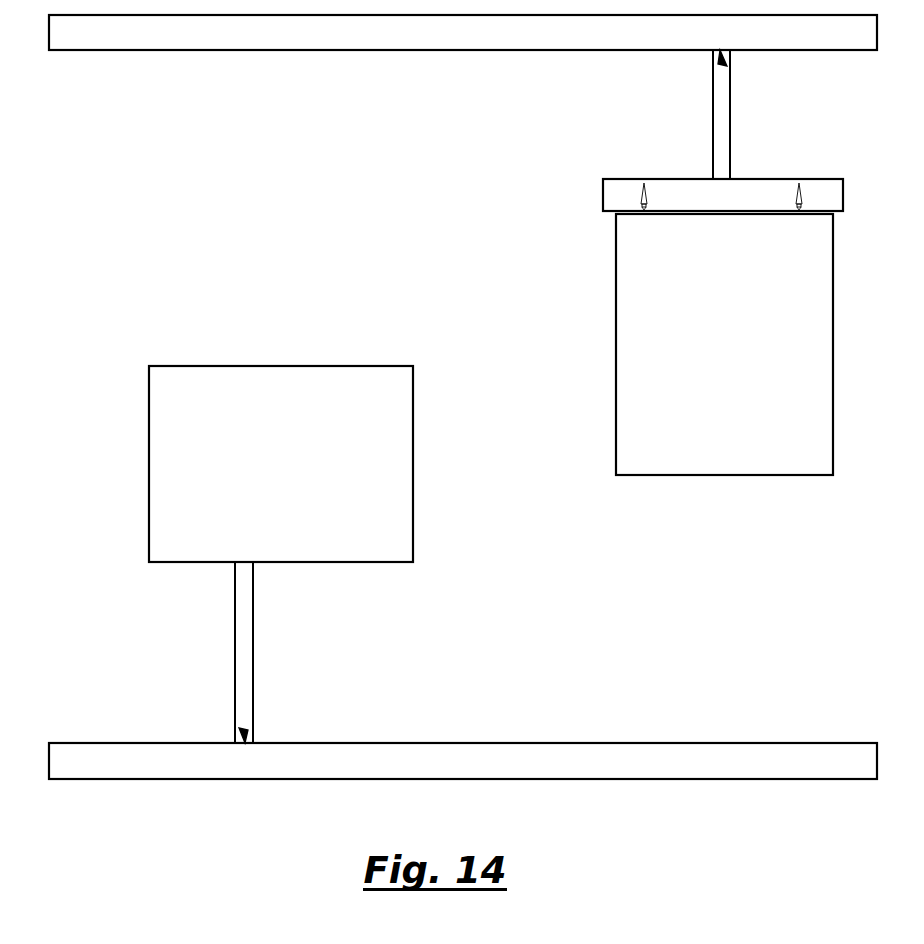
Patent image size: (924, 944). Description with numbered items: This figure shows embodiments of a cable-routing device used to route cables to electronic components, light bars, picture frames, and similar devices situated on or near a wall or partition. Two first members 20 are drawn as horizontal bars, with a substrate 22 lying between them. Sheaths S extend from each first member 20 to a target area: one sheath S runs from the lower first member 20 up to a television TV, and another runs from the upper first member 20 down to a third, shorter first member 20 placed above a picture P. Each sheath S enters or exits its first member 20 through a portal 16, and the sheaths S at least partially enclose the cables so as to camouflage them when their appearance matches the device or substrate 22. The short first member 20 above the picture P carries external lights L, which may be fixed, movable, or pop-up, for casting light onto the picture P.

The first member 20 is at (451, 44).
The portal 16 is at (725, 63).
The substrate 22 is at (444, 218).
The sheath S is at (720, 154).
The external light L is at (640, 195).
The television TV is at (265, 476).
The picture P is at (716, 356).